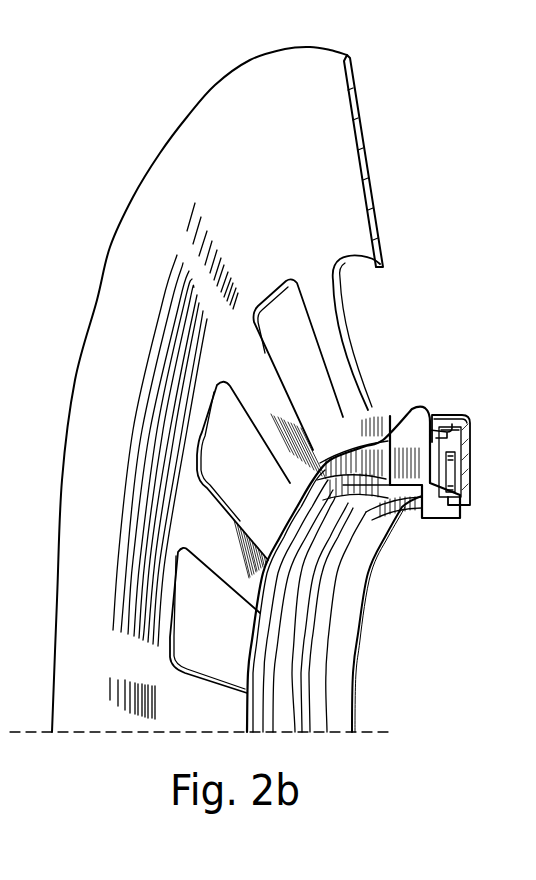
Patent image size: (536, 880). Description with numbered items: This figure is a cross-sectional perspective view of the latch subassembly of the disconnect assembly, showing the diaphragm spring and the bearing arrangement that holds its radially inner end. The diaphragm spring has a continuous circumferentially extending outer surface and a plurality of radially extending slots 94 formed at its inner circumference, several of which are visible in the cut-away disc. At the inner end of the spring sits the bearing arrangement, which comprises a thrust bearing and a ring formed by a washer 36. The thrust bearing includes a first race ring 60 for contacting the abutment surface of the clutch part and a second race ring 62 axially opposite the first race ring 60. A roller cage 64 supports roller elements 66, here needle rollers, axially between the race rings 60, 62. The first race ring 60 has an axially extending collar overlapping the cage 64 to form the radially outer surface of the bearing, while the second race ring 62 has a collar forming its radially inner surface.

The washer 36 is at (382, 412).
The radially extending slots 94 is at (319, 389).
The first race ring 60 is at (460, 465).
The second race ring 62 is at (427, 414).
The roller cage 64 is at (447, 414).
The roller elements 66 is at (443, 478).